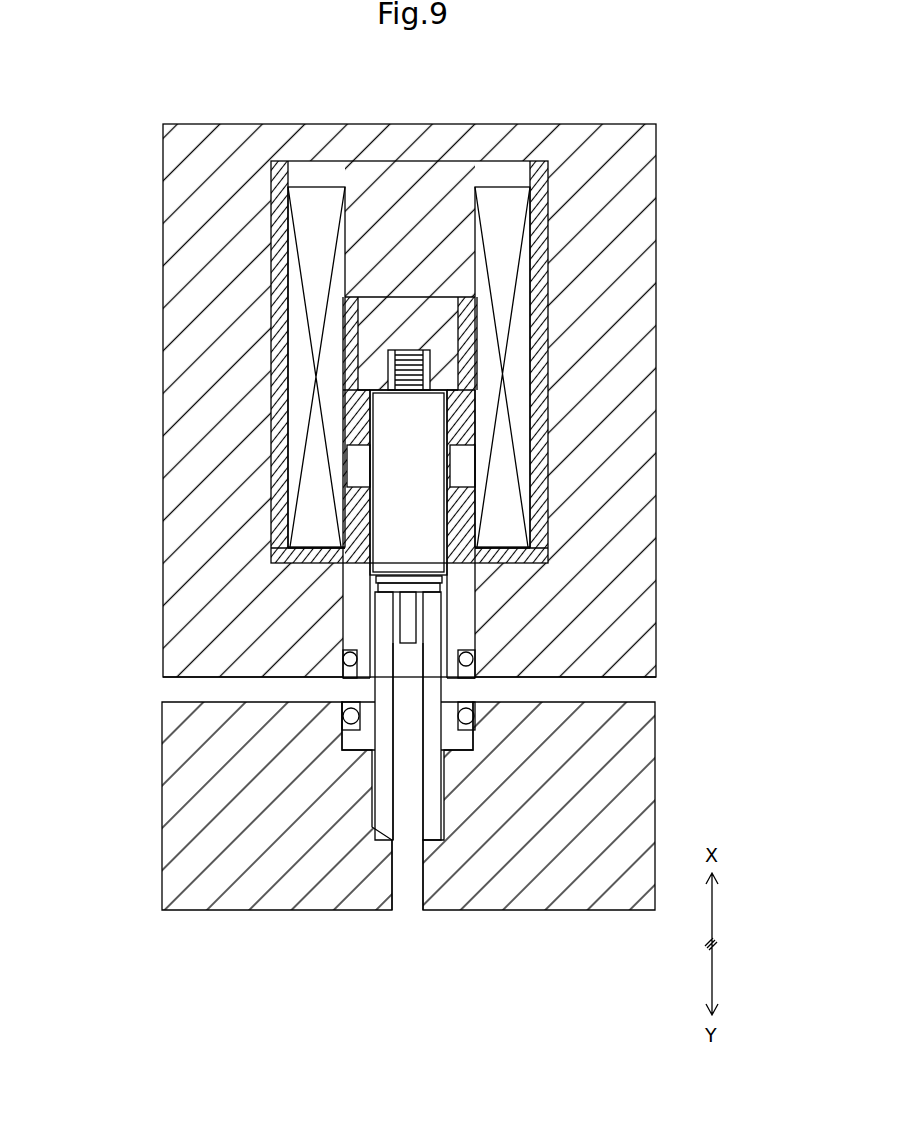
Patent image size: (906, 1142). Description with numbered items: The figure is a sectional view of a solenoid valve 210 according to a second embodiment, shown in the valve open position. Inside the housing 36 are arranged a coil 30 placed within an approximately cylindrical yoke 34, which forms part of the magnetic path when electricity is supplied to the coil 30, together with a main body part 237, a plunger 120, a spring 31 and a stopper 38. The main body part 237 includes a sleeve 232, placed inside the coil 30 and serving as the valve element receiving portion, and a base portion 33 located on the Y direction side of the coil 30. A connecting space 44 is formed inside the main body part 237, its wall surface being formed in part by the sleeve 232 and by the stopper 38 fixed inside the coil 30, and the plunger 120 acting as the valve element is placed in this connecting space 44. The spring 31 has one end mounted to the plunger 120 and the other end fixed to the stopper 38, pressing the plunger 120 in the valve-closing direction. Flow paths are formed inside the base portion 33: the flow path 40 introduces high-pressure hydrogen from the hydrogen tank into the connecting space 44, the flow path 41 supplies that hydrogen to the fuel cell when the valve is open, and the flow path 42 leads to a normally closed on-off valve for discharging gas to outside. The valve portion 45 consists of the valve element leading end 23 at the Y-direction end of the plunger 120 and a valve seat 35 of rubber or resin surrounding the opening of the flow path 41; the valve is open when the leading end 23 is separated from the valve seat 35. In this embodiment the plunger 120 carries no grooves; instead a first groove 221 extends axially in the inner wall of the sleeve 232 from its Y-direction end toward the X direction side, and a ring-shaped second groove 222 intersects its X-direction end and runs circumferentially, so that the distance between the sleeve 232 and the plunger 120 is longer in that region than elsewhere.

The solenoid valve 210 is at (607, 108).
The housing 36 is at (640, 216).
The stopper 38 is at (358, 236).
The yoke 34 is at (292, 271).
The coil 30 is at (300, 362).
The spring 31 is at (430, 360).
The plunger 120 is at (440, 422).
The second groove 222 is at (453, 468).
The connecting space 44 is at (478, 492).
The first groove 221 is at (478, 520).
The valve element leading end 23 is at (441, 582).
The valve seat 35 is at (441, 598).
The valve portion 45 is at (725, 560).
The base portion 33 is at (373, 720).
The sleeve 232 is at (330, 556).
The main body part 237 is at (88, 525).
The flow path 40 is at (172, 705).
The flow path 42 is at (638, 702).
The flow path 41 is at (410, 878).